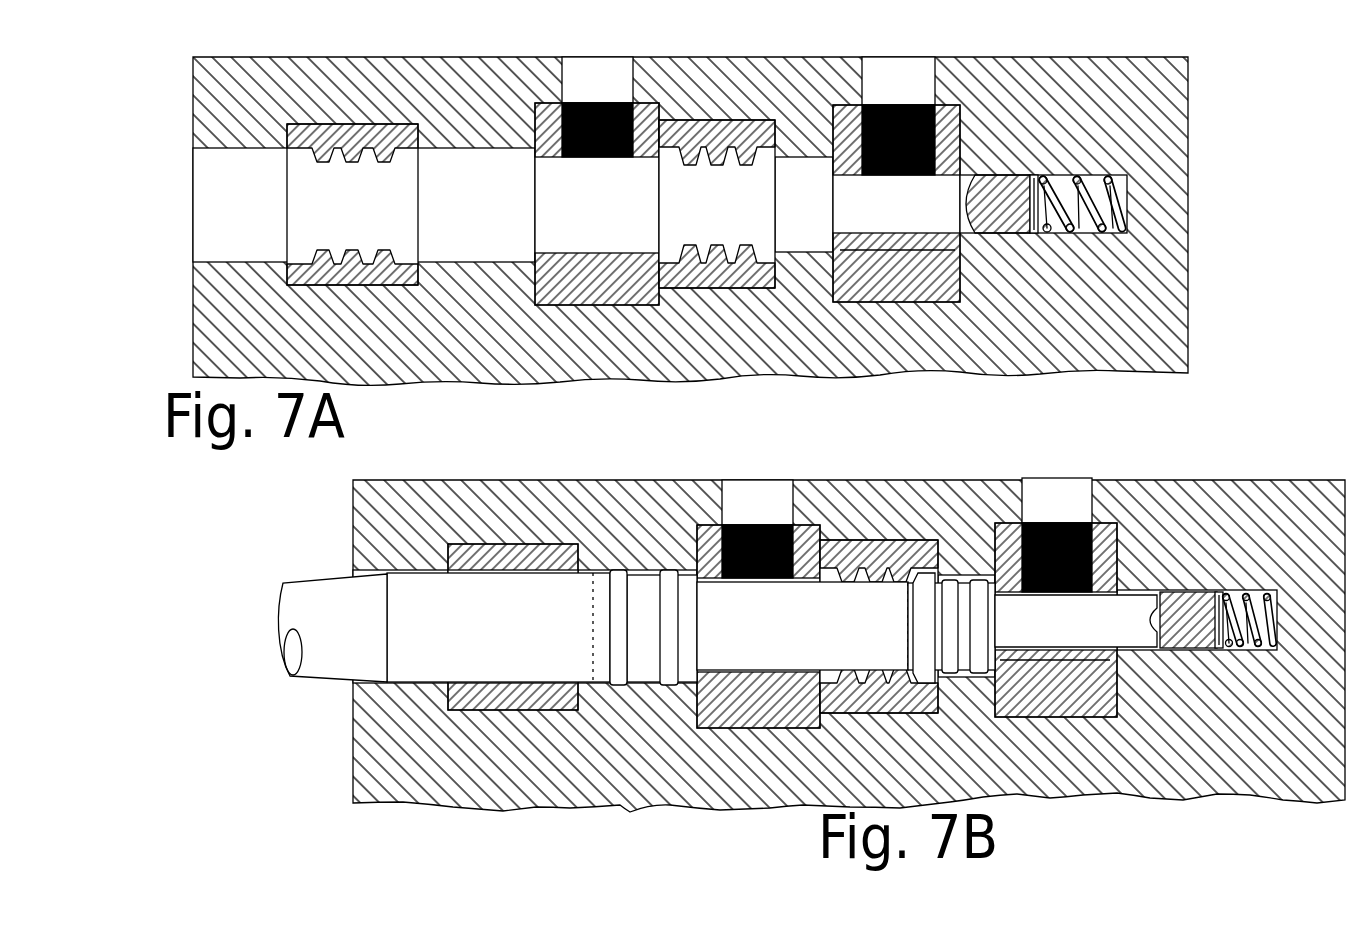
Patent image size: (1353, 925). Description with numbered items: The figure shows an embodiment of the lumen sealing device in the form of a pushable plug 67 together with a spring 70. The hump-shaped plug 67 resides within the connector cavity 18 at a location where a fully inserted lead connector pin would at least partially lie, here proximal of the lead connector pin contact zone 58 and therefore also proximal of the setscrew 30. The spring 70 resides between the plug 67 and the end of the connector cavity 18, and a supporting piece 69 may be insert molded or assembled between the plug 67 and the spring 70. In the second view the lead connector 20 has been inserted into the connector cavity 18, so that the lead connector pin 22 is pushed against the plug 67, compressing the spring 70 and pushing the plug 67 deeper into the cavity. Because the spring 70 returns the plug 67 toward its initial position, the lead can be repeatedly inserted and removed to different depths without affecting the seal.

In FIG. 7A, the connector cavity 18 is at (230, 148).
In FIG. 7B, the connector cavity 18 is at (352, 573).
In FIG. 7B, the lead connector 20 is at (323, 680).
In FIG. 7B, the lead connector pin 22 is at (1143, 640).
In FIG. 7A, the setscrew 30 is at (900, 105).
In FIG. 7B, the setscrew 30 is at (1057, 523).
In FIG. 7A, the lead connector pin contact zone 58 is at (895, 250).
In FIG. 7B, the lead connector pin contact zone 58 is at (1060, 660).
In FIG. 7A, the pushable plug 67 is at (988, 175).
In FIG. 7B, the pushable plug 67 is at (1175, 592).
In FIG. 7A, the supporting piece 69 is at (1030, 175).
In FIG. 7B, the supporting piece 69 is at (1220, 592).
In FIG. 7A, the spring 70 is at (1100, 180).
In FIG. 7B, the spring 70 is at (1262, 592).